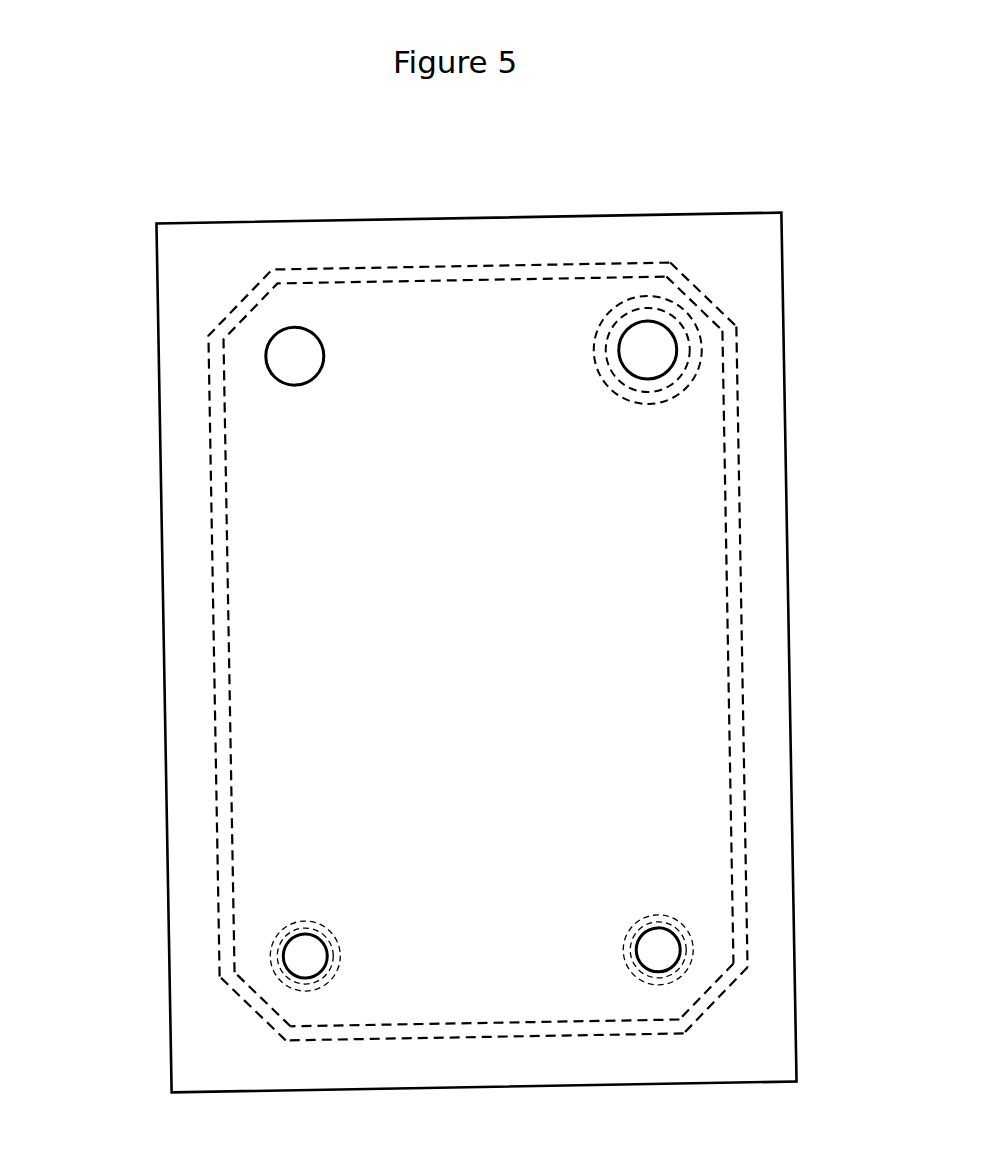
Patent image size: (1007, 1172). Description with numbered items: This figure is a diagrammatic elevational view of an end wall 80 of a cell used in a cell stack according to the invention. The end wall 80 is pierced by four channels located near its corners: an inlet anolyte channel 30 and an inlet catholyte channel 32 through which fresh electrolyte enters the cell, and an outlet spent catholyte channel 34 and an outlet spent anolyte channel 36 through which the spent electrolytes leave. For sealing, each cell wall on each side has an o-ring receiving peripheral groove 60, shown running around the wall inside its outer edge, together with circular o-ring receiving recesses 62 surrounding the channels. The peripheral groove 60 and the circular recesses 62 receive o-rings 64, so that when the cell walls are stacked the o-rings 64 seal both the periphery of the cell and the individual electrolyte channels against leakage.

The inlet anolyte channel 30 is at (667, 947).
The inlet catholyte channel 32 is at (287, 962).
The outlet spent catholyte channel 34 is at (655, 345).
The outlet spent anolyte channel 36 is at (283, 359).
The o-ring receiving peripheral groove 60 is at (733, 460).
The circular o-ring receiving recesses 62 is at (690, 367).
The o-rings 64 is at (670, 307).
The end wall 80 is at (95, 745).